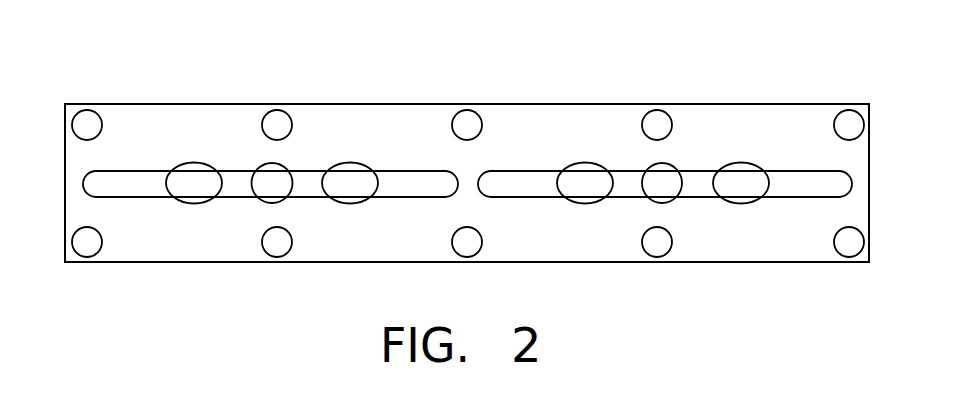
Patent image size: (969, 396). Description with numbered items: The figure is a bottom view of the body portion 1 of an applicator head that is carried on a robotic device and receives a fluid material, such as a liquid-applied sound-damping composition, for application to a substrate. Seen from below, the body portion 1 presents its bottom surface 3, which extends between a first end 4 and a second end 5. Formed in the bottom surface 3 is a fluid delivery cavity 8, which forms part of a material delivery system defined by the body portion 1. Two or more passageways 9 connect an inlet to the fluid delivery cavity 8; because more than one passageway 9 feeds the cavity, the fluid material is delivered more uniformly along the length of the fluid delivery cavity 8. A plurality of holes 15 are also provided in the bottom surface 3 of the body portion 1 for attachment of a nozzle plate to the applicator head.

The body portion 1 is at (465, 151).
The bottom surface 3 is at (733, 122).
The first end 4 is at (870, 155).
The second end 5 is at (65, 160).
The fluid delivery cavity 8 is at (430, 172).
The passageways 9 is at (343, 198).
The holes 15 is at (285, 122).